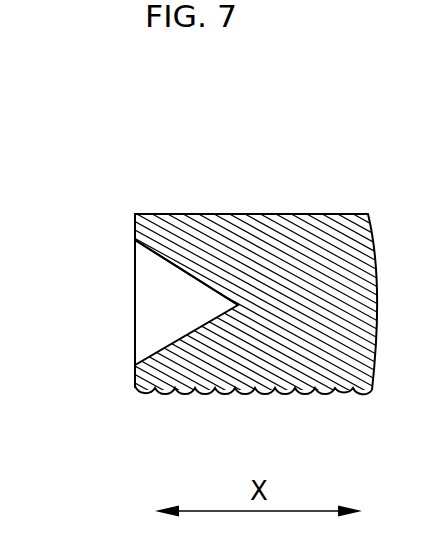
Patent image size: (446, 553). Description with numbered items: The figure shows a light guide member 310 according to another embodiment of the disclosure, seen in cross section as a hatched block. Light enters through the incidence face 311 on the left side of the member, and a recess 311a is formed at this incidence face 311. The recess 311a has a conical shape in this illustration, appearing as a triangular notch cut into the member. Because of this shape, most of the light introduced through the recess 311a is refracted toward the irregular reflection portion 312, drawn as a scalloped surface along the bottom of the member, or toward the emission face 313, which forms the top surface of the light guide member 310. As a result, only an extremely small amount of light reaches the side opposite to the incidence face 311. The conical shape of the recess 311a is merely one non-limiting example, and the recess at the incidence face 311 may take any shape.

The light guide member 310 is at (214, 298).
The incidence face 311 is at (135, 377).
The recess 311a is at (157, 258).
The irregular reflection portion 312 is at (185, 393).
The emission face 313 is at (268, 215).